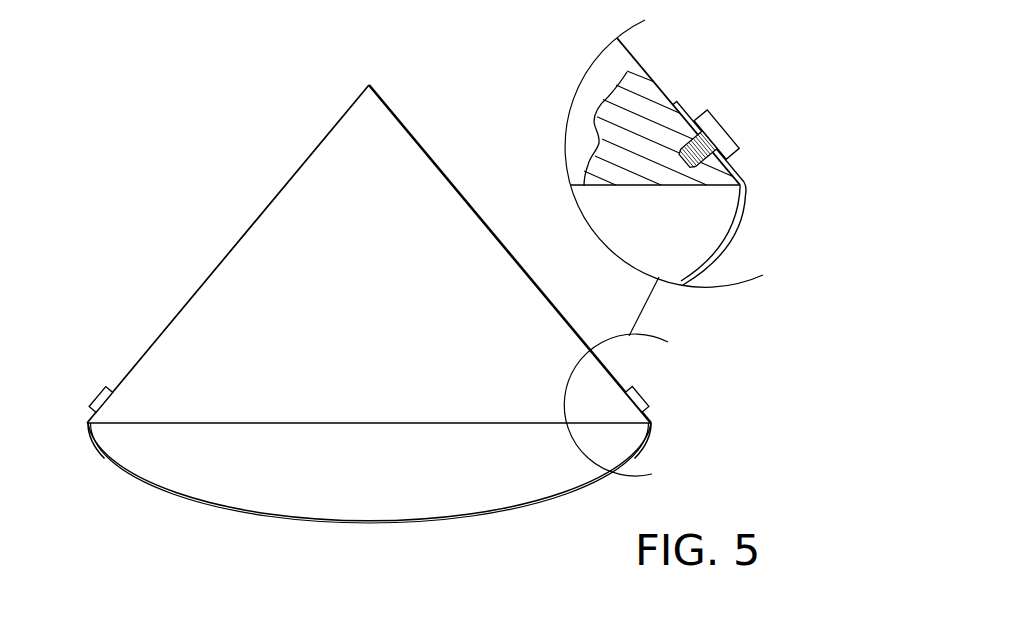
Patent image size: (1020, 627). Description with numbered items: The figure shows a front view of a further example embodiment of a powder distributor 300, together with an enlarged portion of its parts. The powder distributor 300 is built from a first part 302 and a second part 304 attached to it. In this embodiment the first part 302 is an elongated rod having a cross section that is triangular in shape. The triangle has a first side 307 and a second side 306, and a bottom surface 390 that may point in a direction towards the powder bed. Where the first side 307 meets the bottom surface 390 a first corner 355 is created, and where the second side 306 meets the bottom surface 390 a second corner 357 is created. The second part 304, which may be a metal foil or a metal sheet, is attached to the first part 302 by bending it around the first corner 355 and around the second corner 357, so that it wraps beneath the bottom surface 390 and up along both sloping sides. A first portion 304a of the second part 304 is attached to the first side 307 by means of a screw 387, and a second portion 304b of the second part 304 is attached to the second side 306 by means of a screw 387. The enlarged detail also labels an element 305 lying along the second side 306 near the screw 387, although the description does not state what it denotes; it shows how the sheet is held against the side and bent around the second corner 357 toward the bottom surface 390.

The powder distributor 300 is at (212, 121).
The first part 302 is at (417, 216).
The second part 304 is at (540, 508).
The first portion 304a is at (110, 384).
The second portion 304b is at (622, 386).
The liner strip 305 is at (690, 112).
The second side 306 is at (571, 316).
The first side 307 is at (191, 298).
The first corner 355 is at (82, 425).
The second corner 357 is at (652, 424).
The screw 387 is at (716, 137).
The bottom surface 390 is at (331, 425).